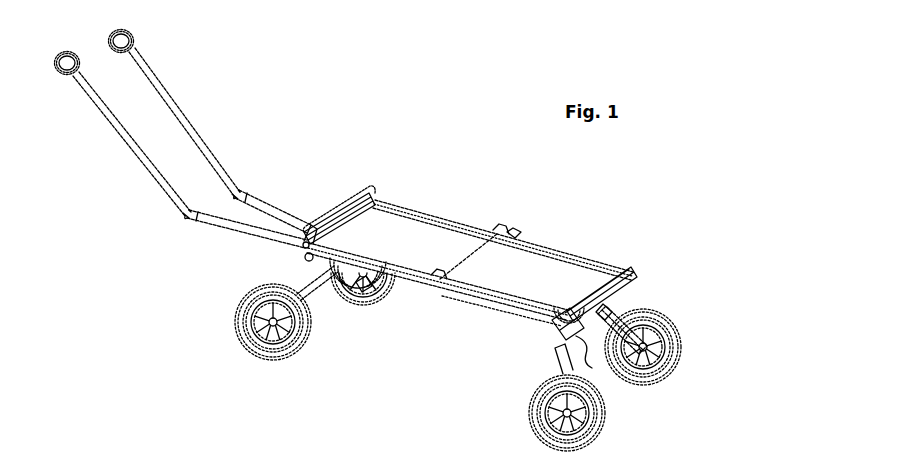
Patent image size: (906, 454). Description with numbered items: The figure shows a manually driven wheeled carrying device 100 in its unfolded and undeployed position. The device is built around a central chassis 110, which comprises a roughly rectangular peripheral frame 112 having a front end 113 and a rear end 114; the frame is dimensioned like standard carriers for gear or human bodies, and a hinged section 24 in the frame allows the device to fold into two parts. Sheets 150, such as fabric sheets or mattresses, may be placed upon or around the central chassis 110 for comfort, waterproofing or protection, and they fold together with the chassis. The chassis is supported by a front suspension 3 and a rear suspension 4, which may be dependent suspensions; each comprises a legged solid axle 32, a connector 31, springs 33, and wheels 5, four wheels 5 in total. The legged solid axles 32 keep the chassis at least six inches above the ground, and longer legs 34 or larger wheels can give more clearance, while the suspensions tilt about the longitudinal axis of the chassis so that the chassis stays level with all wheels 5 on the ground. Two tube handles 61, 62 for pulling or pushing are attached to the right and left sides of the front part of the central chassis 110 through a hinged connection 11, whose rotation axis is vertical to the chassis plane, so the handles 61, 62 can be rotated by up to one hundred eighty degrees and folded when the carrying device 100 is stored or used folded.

The carrying device 100 is at (388, 66).
The handle 61 is at (142, 164).
The handle 62 is at (161, 88).
The hinged connection 11 is at (303, 259).
The central chassis 110 is at (441, 290).
The peripheral frame 112 is at (423, 216).
The front end 113 is at (340, 197).
The rear end 114 is at (644, 277).
The sheets 150 is at (458, 224).
The hinged section 24 is at (516, 236).
The wheels 5 is at (313, 342).
The legs 34 is at (293, 289).
The springs 33 is at (365, 272).
The front suspension 3 is at (340, 292).
The rear suspension 4 is at (547, 347).
The connector 31 is at (583, 349).
The legged solid axle 32 is at (603, 311).